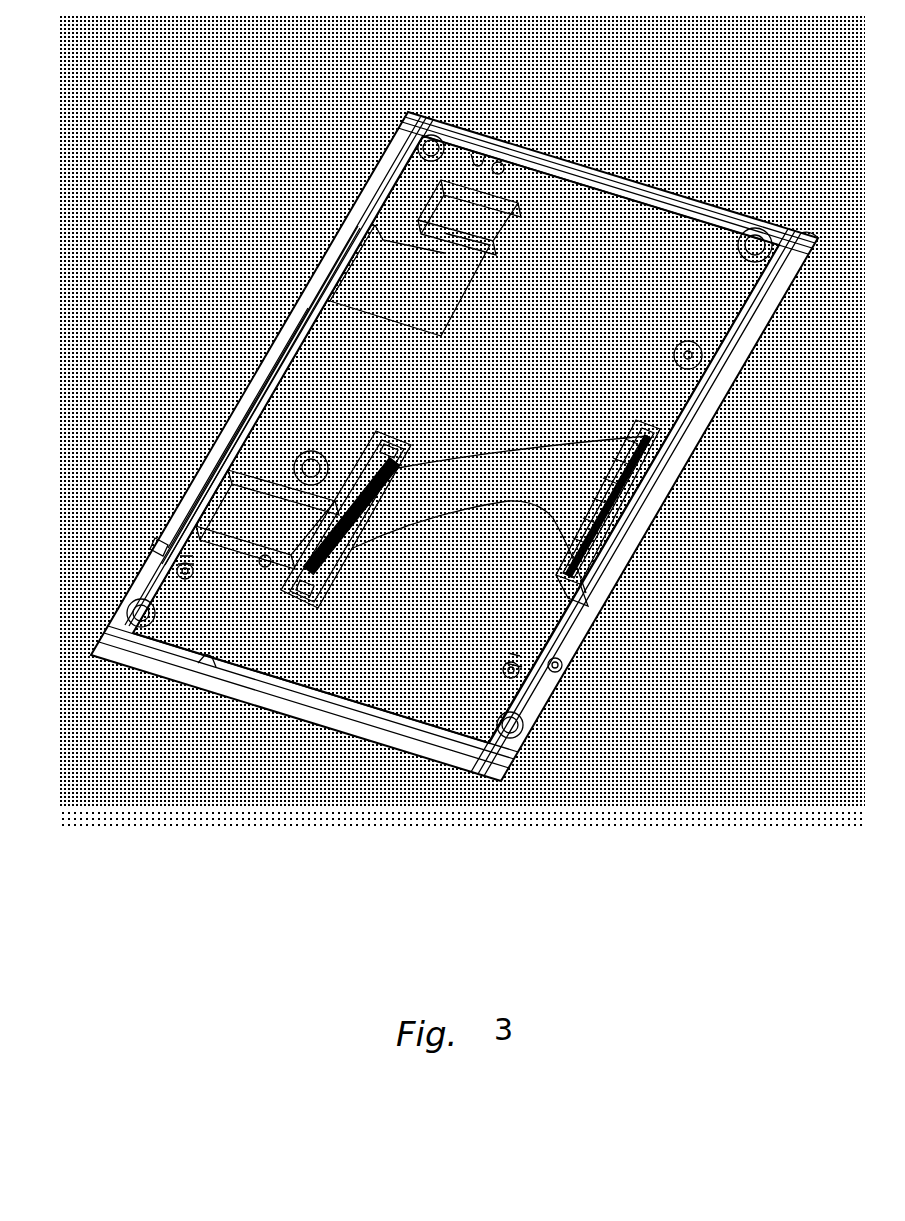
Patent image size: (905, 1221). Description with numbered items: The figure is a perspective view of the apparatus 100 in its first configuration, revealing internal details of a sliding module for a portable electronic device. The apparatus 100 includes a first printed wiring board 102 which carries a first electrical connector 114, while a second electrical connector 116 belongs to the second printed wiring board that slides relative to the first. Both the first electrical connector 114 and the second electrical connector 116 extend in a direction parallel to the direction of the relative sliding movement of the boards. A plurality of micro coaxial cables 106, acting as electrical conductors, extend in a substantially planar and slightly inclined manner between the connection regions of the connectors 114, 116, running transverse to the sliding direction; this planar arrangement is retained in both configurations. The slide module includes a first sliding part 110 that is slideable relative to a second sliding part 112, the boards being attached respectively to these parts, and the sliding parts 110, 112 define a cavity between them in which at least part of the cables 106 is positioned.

The apparatus 100 is at (688, 118).
The first printed wiring board 102 is at (467, 693).
The micro coaxial cables 106 is at (518, 482).
The first sliding part 110 is at (307, 698).
The second sliding part 112 is at (178, 490).
The first electrical connector 114 is at (643, 448).
The second electrical connector 116 is at (348, 453).